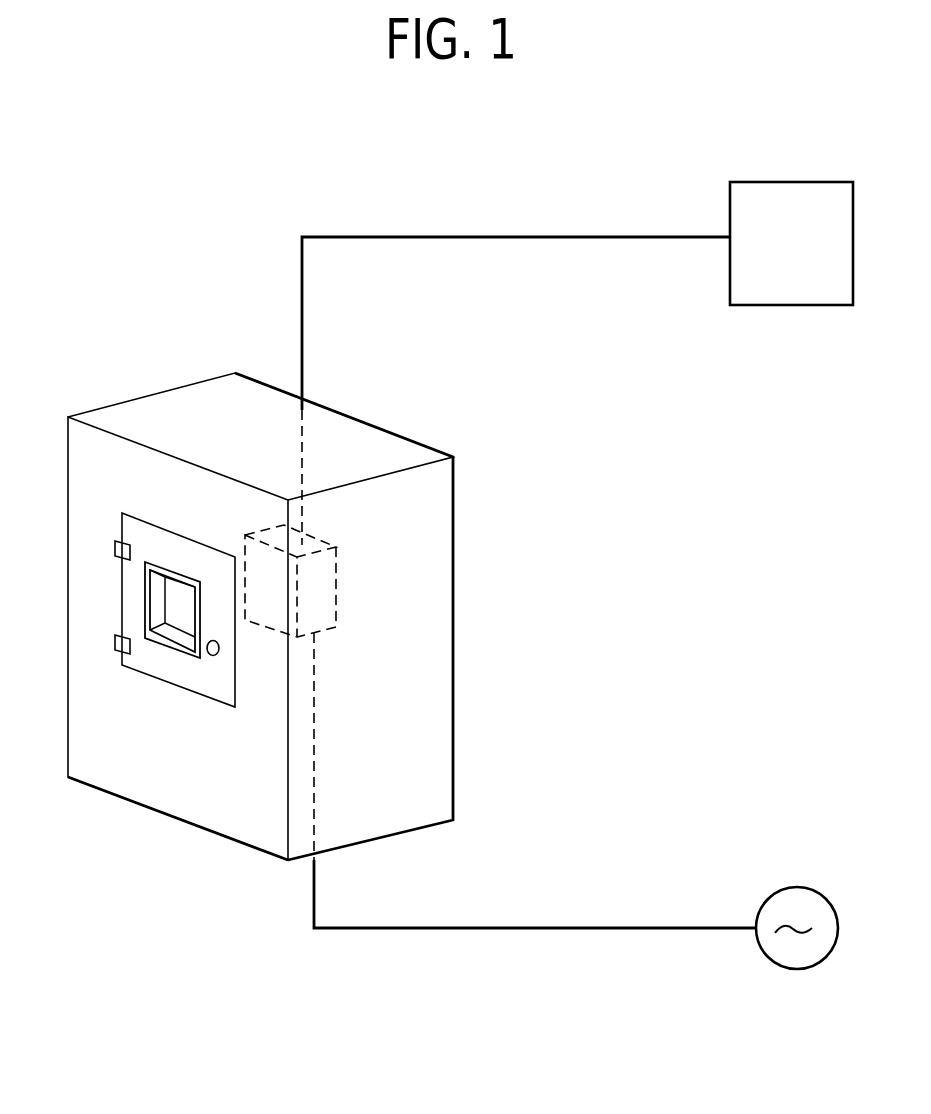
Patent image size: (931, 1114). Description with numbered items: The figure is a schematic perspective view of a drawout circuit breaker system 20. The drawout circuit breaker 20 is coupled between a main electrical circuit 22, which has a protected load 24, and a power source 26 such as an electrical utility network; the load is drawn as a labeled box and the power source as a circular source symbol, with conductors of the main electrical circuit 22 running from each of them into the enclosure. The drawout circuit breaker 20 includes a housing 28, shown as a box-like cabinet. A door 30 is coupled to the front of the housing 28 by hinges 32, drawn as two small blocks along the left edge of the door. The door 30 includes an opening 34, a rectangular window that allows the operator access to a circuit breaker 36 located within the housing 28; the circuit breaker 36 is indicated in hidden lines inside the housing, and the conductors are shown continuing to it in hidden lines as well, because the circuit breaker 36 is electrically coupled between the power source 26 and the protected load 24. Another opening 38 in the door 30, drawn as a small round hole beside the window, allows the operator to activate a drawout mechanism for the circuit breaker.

The drawout circuit breaker system 20 is at (148, 185).
The main electrical circuit 22 is at (490, 237).
The protected load 24 is at (753, 182).
The power source 26 is at (765, 898).
The housing 28 is at (120, 398).
The door 30 is at (153, 677).
The hinges 32 is at (116, 546).
The opening 34 is at (187, 657).
The circuit breaker 36 is at (335, 612).
The opening 38 is at (220, 650).